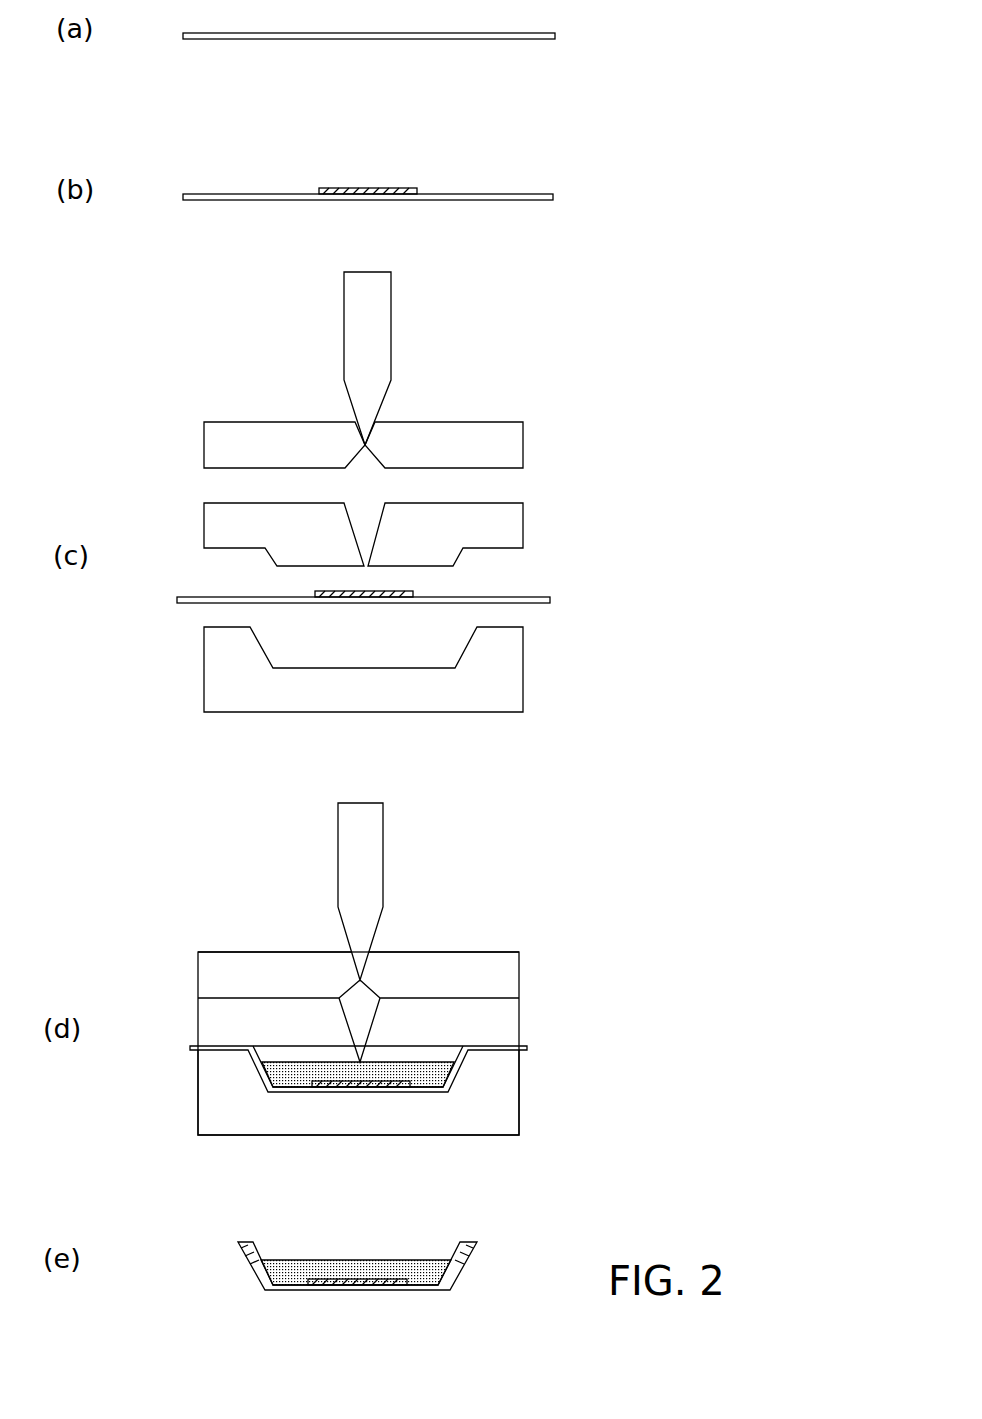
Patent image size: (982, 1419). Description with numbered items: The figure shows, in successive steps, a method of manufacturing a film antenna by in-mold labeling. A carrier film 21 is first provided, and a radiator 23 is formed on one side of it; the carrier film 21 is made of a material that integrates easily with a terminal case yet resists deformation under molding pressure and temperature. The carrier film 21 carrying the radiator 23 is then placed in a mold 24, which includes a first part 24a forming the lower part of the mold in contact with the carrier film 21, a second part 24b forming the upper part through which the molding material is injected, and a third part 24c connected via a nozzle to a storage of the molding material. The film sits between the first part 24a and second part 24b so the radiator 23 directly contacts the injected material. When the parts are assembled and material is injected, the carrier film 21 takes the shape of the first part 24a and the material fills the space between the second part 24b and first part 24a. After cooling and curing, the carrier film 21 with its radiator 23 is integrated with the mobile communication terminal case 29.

The carrier film 21 is at (555, 36).
The radiator 23 is at (400, 188).
The mold 24 is at (653, 668).
The first part 24a is at (508, 680).
The second part 24b is at (513, 532).
The third part 24c is at (513, 445).
The mobile communication terminal case 29 is at (390, 1262).